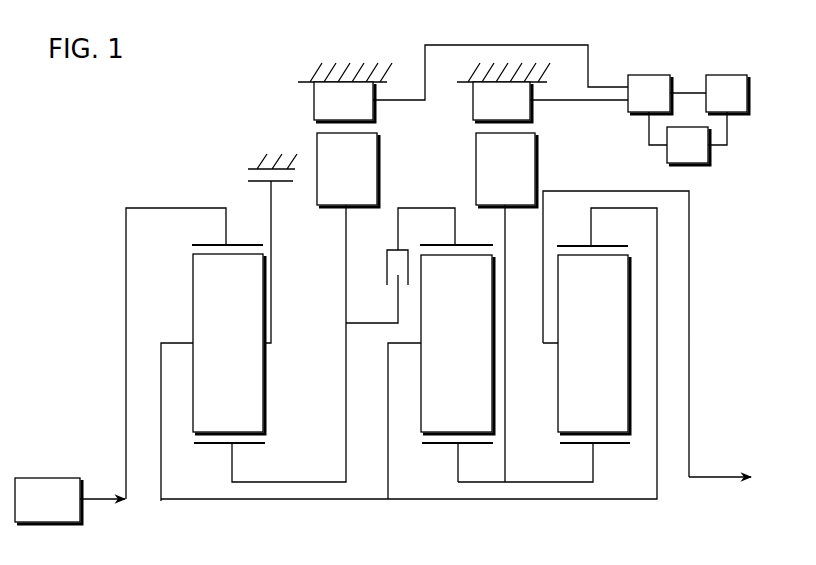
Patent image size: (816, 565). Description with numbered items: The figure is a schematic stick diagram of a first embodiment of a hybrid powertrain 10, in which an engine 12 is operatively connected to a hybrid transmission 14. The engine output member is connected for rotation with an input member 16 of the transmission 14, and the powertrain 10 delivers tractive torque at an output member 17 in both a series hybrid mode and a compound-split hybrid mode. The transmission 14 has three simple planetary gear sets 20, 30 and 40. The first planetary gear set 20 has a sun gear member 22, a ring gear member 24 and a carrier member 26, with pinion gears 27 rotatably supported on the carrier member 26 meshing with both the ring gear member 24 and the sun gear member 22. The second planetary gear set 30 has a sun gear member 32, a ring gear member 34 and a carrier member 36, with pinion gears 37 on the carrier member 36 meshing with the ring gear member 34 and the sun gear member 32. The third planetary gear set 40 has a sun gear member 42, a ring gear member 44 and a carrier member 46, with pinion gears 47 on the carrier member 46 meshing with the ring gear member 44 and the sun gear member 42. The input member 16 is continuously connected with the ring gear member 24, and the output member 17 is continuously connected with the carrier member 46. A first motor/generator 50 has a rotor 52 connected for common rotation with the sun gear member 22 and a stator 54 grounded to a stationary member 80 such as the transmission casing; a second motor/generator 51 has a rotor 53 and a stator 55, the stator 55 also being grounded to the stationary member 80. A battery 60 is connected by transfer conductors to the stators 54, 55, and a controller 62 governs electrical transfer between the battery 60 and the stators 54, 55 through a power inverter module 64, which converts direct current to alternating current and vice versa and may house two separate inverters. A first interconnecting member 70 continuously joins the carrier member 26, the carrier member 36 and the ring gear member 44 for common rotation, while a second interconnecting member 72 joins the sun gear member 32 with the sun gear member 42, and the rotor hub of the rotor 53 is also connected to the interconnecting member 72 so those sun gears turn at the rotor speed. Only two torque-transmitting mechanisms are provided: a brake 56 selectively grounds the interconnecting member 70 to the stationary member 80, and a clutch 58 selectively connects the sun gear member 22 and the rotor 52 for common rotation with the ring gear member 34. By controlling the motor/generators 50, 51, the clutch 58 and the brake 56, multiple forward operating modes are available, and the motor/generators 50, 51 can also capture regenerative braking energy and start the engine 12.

The hybrid powertrain 10 is at (55, 348).
The engine 12 is at (48, 501).
The hybrid transmission 14 is at (206, 146).
The input member 16 is at (100, 501).
The output member 17 is at (723, 477).
The first planetary gear set 20 is at (214, 458).
The sun gear member 22 is at (249, 446).
The ring gear member 24 is at (209, 243).
The carrier member 26 is at (176, 342).
The pinion gears 27 is at (229, 344).
The second planetary gear set 30 is at (476, 459).
The sun gear member 32 is at (439, 446).
The ring gear member 34 is at (463, 243).
The carrier member 36 is at (404, 345).
The pinion gears 37 is at (457, 344).
The third planetary gear set 40 is at (579, 459).
The sun gear member 42 is at (608, 446).
The ring gear member 44 is at (575, 245).
The carrier member 46 is at (553, 344).
The pinion gears 47 is at (594, 344).
The first motor/generator 50 is at (392, 136).
The second motor/generator 51 is at (550, 136).
The rotor 52 is at (348, 170).
The rotor 53 is at (506, 170).
The stator 54 is at (344, 102).
The stator 55 is at (502, 102).
The brake 56 is at (298, 180).
The clutch 58 is at (390, 290).
The battery 60 is at (727, 94).
The controller 62 is at (688, 146).
The power inverter module 64 is at (650, 94).
The first interconnecting member 70 is at (442, 499).
The second interconnecting member 72 is at (526, 482).
The stationary member 80 is at (265, 158).